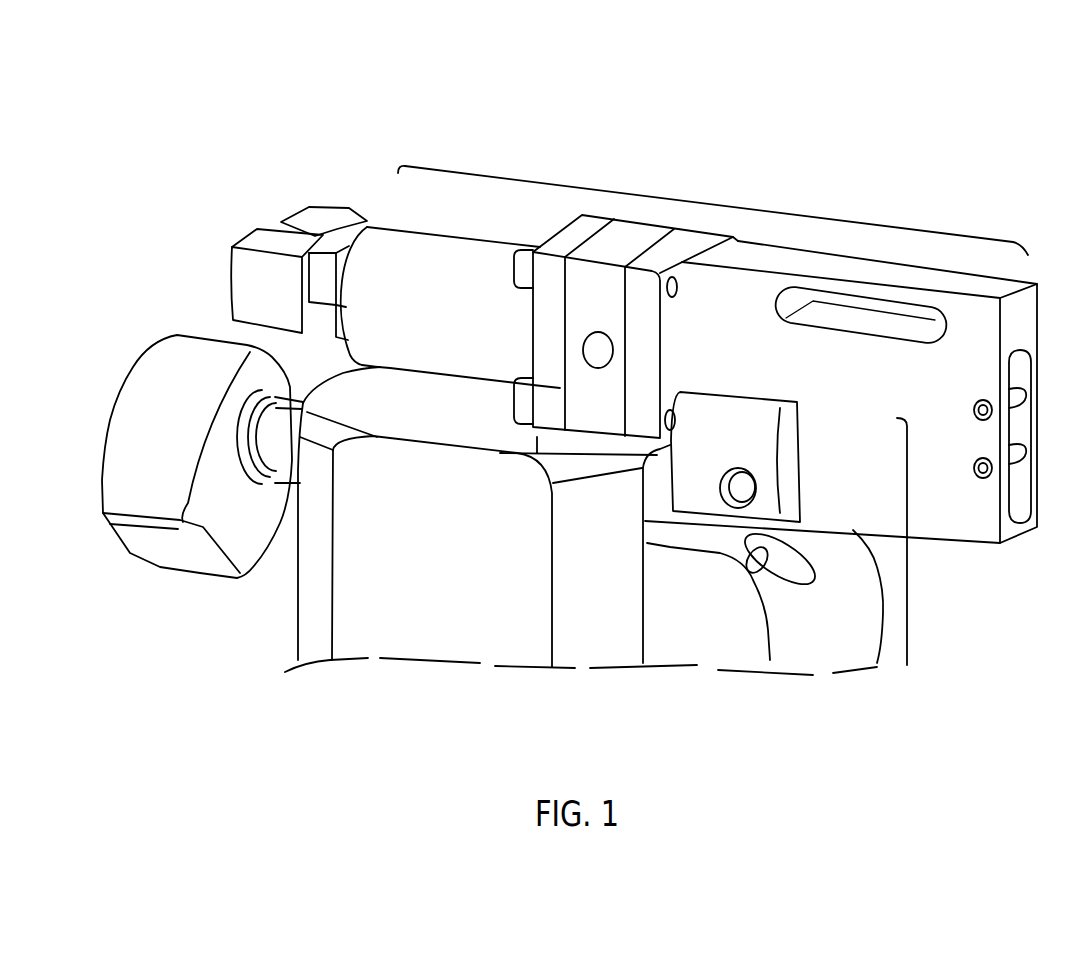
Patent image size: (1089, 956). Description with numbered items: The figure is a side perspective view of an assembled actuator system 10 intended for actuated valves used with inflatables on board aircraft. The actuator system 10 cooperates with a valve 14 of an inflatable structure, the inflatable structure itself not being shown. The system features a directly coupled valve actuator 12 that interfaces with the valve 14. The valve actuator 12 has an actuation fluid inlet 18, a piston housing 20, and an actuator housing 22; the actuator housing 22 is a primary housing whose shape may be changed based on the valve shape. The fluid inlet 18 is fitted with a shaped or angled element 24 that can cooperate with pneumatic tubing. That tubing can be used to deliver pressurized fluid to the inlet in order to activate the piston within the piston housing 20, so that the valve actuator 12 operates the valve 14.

The actuator system 10 is at (645, 112).
The valve actuator 12 is at (716, 204).
The inflatable structure valve 14 is at (908, 547).
The actuation fluid inlet 18 is at (448, 312).
The piston housing 20 is at (598, 465).
The actuator housing 22 is at (859, 386).
The shaped or angled element 24 is at (323, 217).